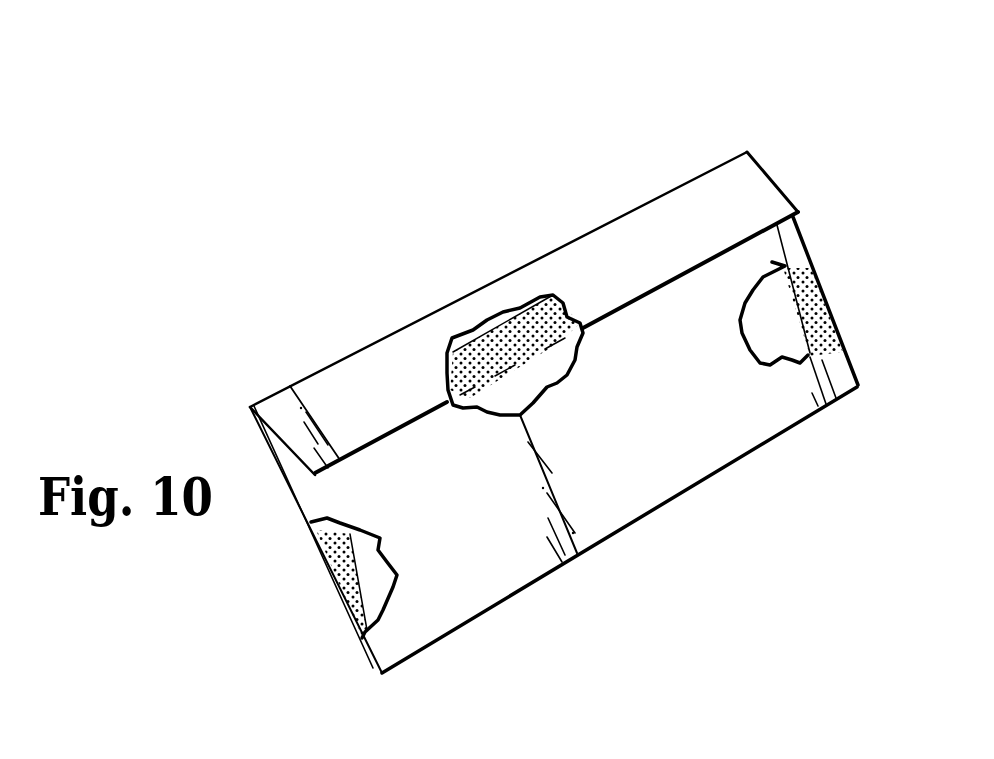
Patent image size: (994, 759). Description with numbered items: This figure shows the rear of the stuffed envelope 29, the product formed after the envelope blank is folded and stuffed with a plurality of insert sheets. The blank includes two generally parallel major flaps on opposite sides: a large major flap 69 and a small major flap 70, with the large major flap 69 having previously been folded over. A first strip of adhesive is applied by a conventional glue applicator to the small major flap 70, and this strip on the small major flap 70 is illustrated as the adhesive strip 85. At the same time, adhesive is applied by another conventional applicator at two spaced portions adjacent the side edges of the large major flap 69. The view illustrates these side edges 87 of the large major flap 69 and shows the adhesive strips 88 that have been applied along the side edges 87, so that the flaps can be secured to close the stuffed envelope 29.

The stuffed envelope 29 is at (897, 134).
The large major flap 69 is at (492, 566).
The small major flap 70 is at (737, 190).
The adhesive strip 85 is at (512, 346).
The side edges 87 is at (800, 250).
The adhesive strips 88 is at (821, 320).